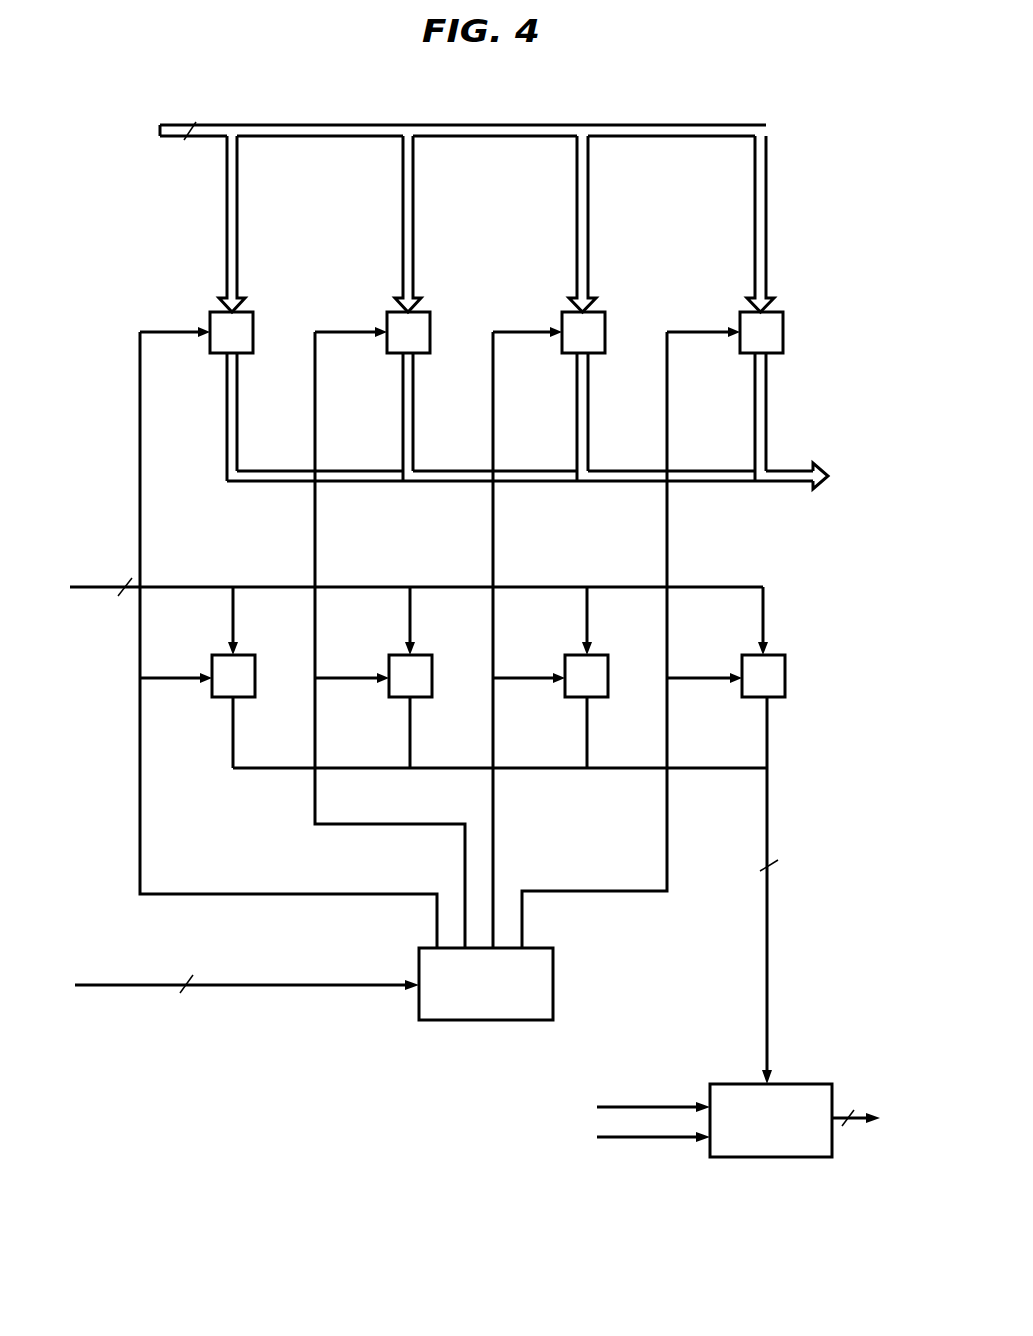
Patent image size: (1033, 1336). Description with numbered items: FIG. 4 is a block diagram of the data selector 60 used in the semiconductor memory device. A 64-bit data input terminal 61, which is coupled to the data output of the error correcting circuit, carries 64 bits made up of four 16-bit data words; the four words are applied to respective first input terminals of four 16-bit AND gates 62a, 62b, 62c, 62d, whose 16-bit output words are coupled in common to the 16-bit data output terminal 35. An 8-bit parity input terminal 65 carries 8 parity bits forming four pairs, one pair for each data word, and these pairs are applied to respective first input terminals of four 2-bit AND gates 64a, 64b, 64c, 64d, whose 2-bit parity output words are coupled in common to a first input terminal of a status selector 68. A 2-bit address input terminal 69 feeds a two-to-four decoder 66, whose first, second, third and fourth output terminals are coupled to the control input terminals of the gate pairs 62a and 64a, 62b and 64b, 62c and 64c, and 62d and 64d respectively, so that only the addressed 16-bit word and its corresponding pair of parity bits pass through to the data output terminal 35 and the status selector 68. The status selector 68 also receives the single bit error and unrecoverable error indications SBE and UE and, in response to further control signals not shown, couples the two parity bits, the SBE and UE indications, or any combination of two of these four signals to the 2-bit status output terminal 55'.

The data selector 60 is at (97, 248).
The data input terminal 61 is at (160, 131).
The 64-bit bus width indication 64 is at (196, 145).
The 16-bit bus width indication 16 is at (242, 223).
The 16-bit AND gate 62a is at (253, 314).
The 16-bit AND gate 62b is at (430, 314).
The 16-bit AND gate 62c is at (605, 314).
The 16-bit AND gate 62d is at (783, 314).
The data output terminal 35 is at (818, 466).
The parity input terminal 65 is at (95, 590).
The eight-bit bus width indication 8 is at (125, 572).
The 2-bit AND gate 64a is at (252, 657).
The 2-bit AND gate 64b is at (428, 657).
The 2-bit AND gate 64c is at (604, 657).
The 2-bit AND gate 64d is at (780, 657).
The 2 to 4 decoder 66 is at (553, 991).
The address input terminal 69 is at (98, 987).
The two-bit bus width indication 2 is at (517, 987).
The status selector 68 is at (735, 1084).
The status output terminal 55' is at (874, 1132).